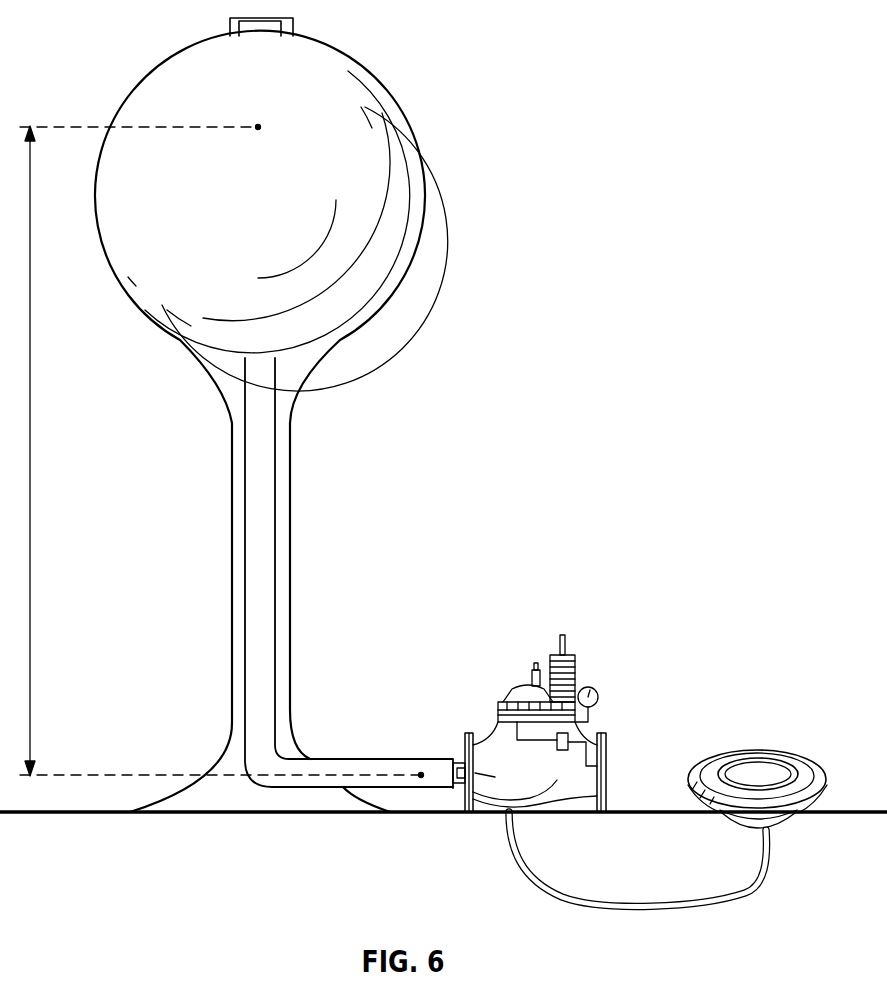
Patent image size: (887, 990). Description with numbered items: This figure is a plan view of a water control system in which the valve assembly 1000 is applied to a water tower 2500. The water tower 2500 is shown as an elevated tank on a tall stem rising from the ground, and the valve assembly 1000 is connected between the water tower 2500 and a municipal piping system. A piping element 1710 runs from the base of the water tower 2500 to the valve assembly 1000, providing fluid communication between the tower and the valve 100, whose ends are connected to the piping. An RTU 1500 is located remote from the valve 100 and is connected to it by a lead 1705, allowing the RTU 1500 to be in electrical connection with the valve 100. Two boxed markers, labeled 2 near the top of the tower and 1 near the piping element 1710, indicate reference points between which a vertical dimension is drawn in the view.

The water tower 2500 is at (388, 98).
The pressure measurement point 2 is at (258, 124).
The piping element 1710 is at (333, 758).
The pressure measurement point 1 is at (421, 772).
The valve assembly 1000 is at (580, 571).
The valve 100 is at (602, 644).
The lead 1705 is at (530, 878).
The RTU 1500 is at (757, 751).